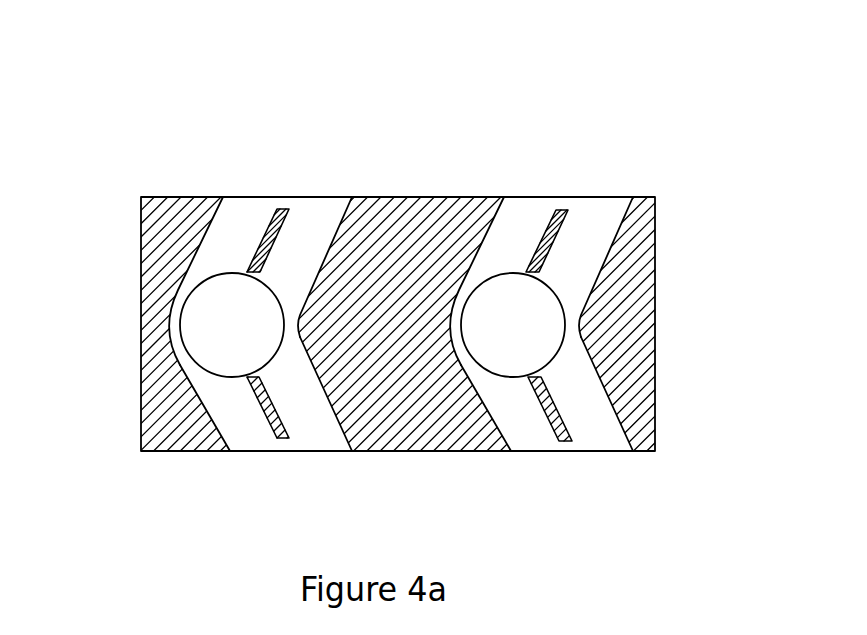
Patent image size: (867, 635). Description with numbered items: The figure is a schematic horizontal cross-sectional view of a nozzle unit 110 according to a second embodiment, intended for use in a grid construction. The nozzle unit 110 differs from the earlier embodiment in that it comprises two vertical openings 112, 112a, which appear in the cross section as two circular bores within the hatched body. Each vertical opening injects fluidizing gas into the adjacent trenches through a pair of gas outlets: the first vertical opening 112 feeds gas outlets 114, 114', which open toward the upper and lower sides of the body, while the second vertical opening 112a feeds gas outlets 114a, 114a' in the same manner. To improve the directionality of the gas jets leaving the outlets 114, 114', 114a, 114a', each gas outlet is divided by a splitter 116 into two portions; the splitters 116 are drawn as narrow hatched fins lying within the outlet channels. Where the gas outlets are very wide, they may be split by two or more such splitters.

The nozzle unit 110 is at (609, 197).
The vertical opening 112 is at (232, 332).
The vertical opening 112a is at (532, 317).
The gas outlet 114 is at (260, 230).
The gas outlet 114' is at (266, 438).
The gas outlet 114a is at (541, 234).
The gas outlet 114a' is at (563, 439).
The splitter 116 is at (278, 209).